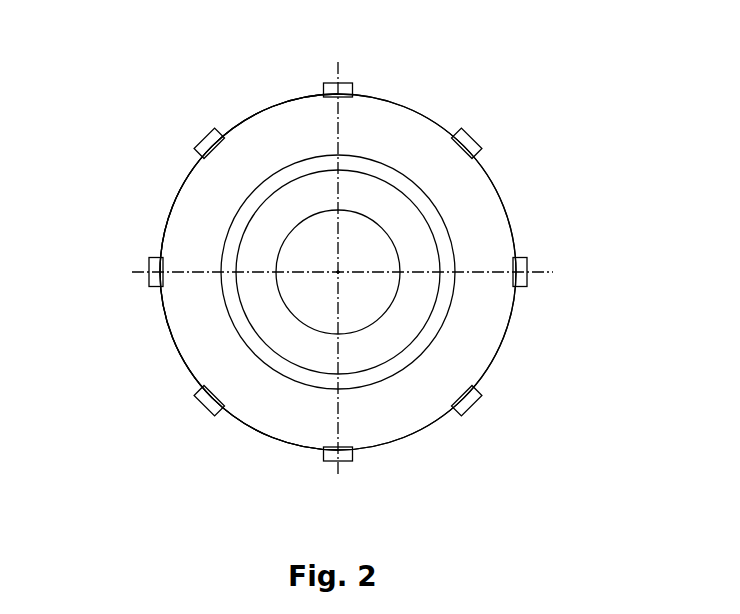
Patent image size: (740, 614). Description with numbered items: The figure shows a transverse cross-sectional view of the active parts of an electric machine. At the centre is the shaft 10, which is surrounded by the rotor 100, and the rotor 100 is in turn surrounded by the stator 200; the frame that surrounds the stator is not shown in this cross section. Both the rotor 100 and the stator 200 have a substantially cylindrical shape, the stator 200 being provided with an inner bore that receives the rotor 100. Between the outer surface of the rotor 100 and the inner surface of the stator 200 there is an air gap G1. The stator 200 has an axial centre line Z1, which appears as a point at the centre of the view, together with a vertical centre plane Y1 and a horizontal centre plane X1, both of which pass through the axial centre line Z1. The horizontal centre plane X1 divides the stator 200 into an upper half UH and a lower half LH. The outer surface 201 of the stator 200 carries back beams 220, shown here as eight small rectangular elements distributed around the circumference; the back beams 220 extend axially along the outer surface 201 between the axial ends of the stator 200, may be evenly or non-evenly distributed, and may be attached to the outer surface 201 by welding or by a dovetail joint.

The shaft 10 is at (374, 259).
The rotor 100 is at (308, 187).
The stator 200 is at (400, 118).
The outer surface 201 is at (173, 197).
The back beams 220 is at (470, 138).
The air gap G1 is at (447, 237).
The upper half UH is at (117, 68).
The lower half LH is at (122, 443).
The horizontal centre plane X1 is at (341, 275).
The vertical centre plane Y1 is at (333, 273).
The axial centre line Z1 is at (336, 276).